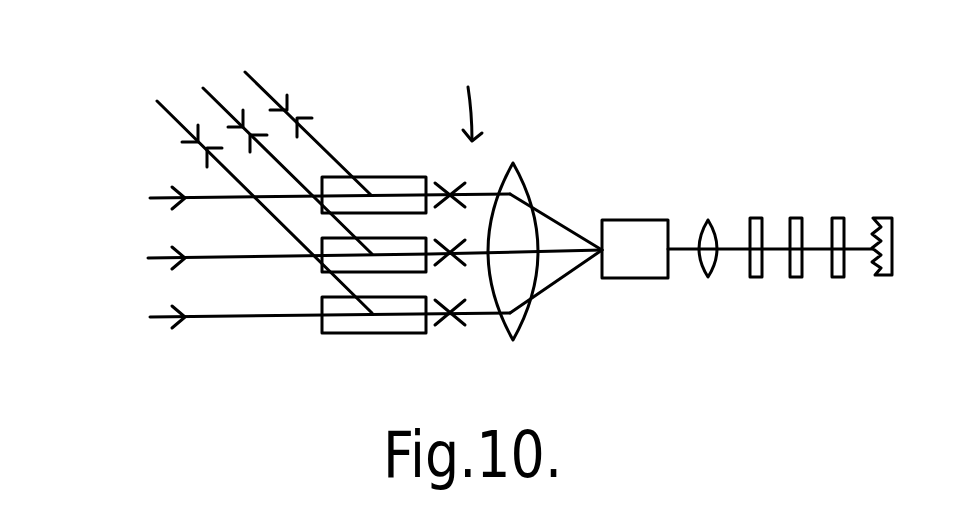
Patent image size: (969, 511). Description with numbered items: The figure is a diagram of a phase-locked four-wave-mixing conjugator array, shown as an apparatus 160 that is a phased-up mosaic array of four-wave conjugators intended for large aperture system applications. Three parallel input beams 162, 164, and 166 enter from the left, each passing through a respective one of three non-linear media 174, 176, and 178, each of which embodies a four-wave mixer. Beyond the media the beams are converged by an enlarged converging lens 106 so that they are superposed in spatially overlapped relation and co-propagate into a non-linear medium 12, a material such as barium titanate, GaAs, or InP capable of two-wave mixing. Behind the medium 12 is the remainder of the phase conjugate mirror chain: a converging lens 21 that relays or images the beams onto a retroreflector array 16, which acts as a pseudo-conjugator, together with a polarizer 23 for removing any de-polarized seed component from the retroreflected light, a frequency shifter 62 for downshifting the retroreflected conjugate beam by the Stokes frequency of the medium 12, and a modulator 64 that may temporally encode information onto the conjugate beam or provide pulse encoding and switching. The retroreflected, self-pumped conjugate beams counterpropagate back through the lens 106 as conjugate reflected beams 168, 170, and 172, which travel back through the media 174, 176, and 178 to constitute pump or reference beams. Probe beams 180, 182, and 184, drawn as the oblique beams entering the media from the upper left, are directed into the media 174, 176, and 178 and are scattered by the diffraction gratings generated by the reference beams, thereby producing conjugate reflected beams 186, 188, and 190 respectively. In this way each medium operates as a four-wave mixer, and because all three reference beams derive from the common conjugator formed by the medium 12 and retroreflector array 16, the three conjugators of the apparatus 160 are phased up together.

The non-linear medium 12 is at (633, 220).
The retroreflector array 16 is at (883, 275).
The converging lens 21 is at (707, 220).
The polarizer 23 is at (760, 218).
The frequency shifter 62 is at (792, 277).
The modulator 64 is at (838, 218).
The enlarged converging lens 106 is at (528, 316).
The apparatus 160 is at (470, 98).
The input beam 162 is at (150, 198).
The input beam 164 is at (148, 258).
The input beam 166 is at (148, 317).
The conjugate reflected beam 168 is at (485, 190).
The conjugate reflected beam 170 is at (477, 250).
The conjugate reflected beam 172 is at (476, 318).
The non-linear medium 174 is at (403, 177).
The non-linear medium 176 is at (322, 268).
The non-linear medium 178 is at (375, 333).
The probe beam 180 is at (247, 72).
The probe beam 182 is at (204, 88).
The probe beam 184 is at (161, 106).
The conjugate reflected beam 186 is at (302, 185).
The conjugate reflected beam 188 is at (327, 152).
The conjugate reflected beam 190 is at (223, 167).